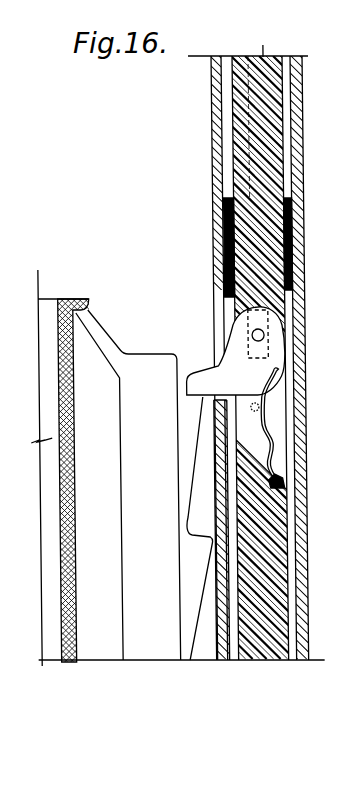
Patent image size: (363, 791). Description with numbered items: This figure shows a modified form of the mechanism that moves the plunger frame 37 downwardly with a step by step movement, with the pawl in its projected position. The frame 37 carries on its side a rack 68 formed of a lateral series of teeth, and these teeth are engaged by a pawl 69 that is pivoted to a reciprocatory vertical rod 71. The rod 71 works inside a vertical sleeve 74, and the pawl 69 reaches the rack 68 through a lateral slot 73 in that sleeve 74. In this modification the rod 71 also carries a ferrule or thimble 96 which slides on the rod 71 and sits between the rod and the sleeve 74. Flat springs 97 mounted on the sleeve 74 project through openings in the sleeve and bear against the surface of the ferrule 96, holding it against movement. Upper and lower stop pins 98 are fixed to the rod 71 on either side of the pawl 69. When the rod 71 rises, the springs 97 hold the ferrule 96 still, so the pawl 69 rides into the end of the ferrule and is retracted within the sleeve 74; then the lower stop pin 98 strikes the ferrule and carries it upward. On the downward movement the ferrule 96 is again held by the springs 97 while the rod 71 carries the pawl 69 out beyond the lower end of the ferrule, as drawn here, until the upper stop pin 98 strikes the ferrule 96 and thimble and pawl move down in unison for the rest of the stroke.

The frame 37 is at (70, 549).
The rack 68 is at (181, 572).
The pawl 69 is at (224, 378).
The reciprocatory vertical rod 71 is at (232, 134).
The lateral slot 73 is at (216, 285).
The vertical sleeve 74 is at (210, 82).
The ferrule or thimble 96 is at (230, 193).
The flat springs 97 is at (245, 163).
The stop pins 98 is at (255, 407).